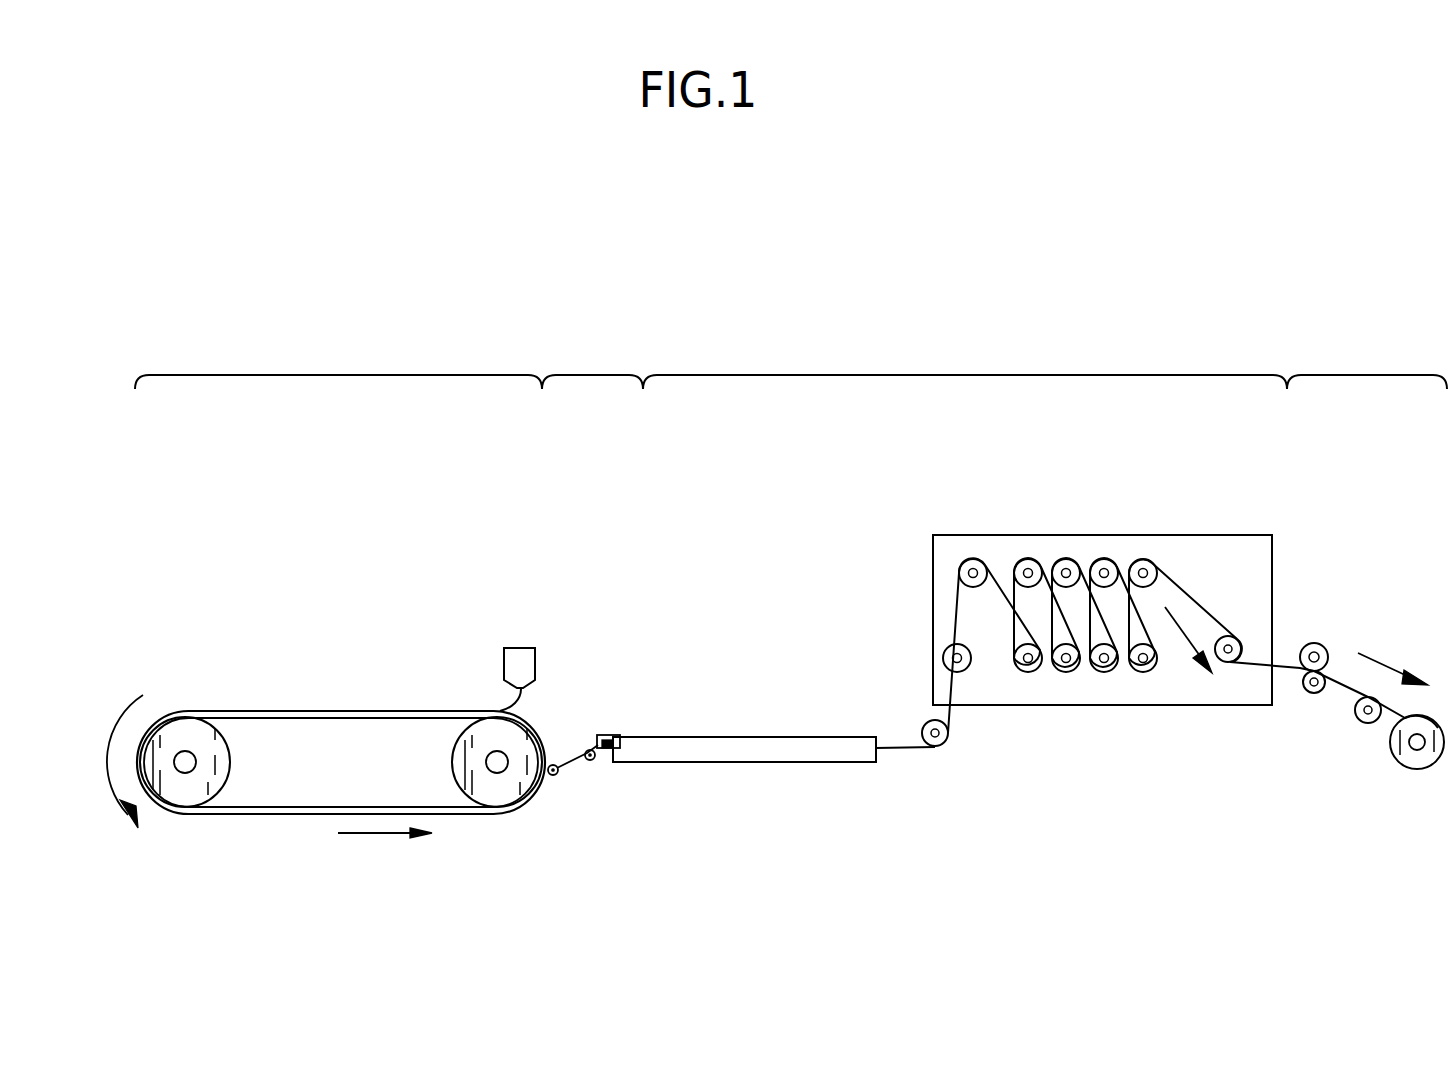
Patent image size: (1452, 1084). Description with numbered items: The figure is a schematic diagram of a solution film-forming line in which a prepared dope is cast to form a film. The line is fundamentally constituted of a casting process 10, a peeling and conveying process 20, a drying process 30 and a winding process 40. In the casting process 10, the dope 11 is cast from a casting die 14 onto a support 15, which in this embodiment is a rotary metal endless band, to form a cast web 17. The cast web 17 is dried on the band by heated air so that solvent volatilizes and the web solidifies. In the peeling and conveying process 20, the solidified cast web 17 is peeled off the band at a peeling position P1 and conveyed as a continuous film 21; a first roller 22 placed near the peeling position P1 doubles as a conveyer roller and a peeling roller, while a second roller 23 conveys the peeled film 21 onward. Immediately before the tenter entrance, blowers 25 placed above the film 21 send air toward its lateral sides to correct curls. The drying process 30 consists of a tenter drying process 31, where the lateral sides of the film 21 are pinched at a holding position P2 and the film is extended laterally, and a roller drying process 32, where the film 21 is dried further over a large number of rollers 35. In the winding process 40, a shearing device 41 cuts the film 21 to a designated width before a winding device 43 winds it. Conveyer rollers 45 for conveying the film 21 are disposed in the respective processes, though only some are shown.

The casting process 10 is at (338, 375).
The dope 11 is at (515, 690).
The casting die 14 is at (520, 648).
The support 15 is at (275, 712).
The cast web 17 is at (232, 711).
The peeling and conveying process 20 is at (593, 375).
The film 21 is at (585, 748).
The first roller 22 is at (548, 790).
The second roller 23 is at (590, 762).
The blowers 25 is at (606, 763).
The drying process 30 is at (966, 375).
The tenter drying process 31 is at (837, 737).
The roller drying process 32 is at (975, 535).
The rollers 35 is at (1104, 672).
The winding process 40 is at (1367, 375).
The shearing device 41 is at (1312, 643).
The winding device 43 is at (1412, 768).
The conveyer rollers 45 is at (930, 722).
The peeling position P1 is at (553, 765).
The holding position P2 is at (625, 735).